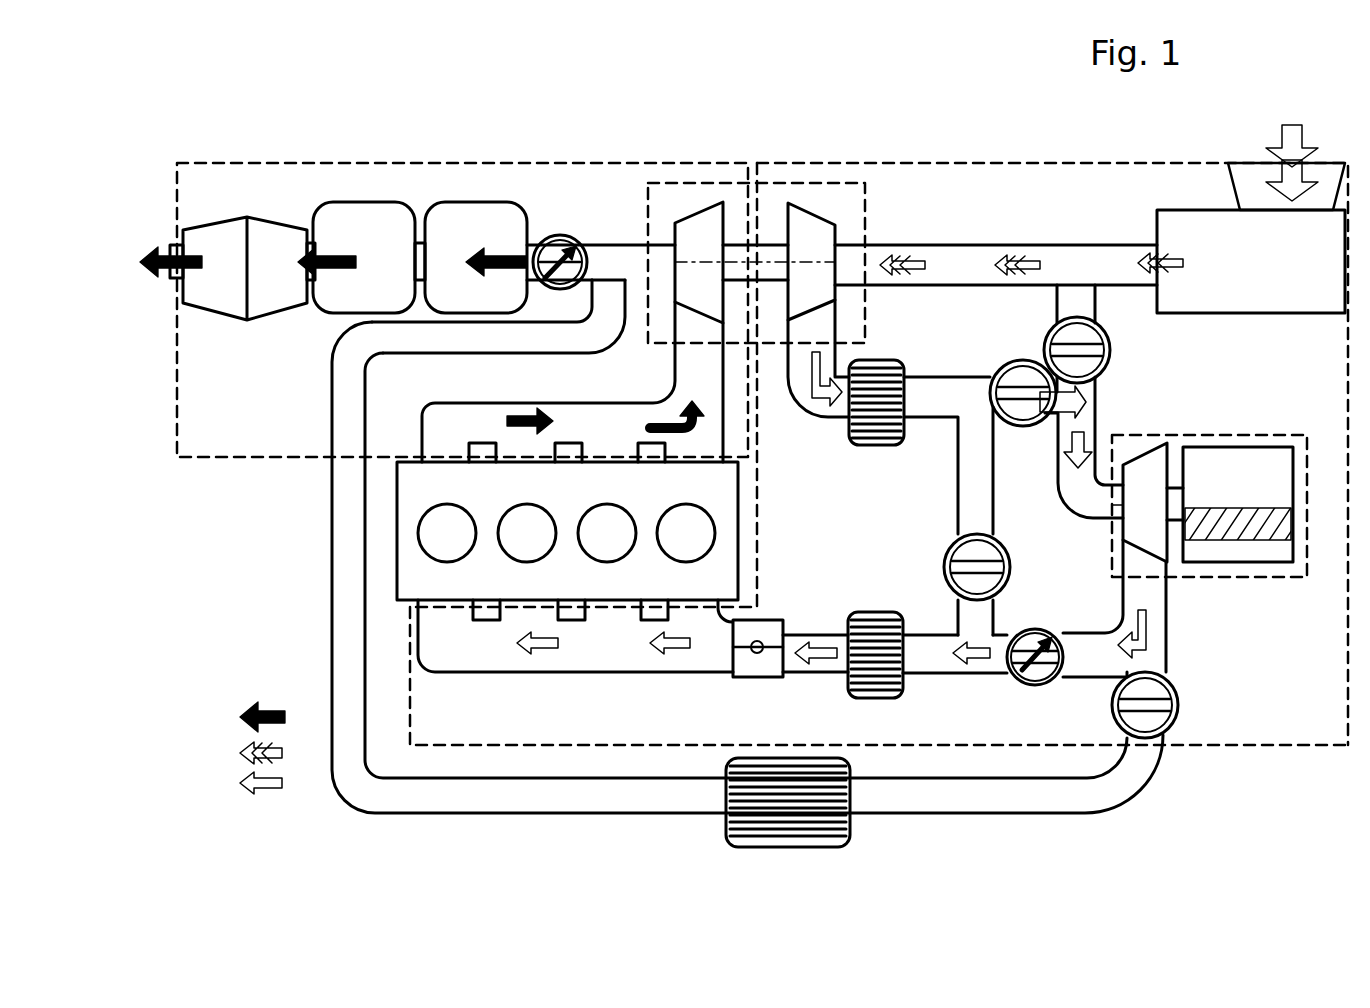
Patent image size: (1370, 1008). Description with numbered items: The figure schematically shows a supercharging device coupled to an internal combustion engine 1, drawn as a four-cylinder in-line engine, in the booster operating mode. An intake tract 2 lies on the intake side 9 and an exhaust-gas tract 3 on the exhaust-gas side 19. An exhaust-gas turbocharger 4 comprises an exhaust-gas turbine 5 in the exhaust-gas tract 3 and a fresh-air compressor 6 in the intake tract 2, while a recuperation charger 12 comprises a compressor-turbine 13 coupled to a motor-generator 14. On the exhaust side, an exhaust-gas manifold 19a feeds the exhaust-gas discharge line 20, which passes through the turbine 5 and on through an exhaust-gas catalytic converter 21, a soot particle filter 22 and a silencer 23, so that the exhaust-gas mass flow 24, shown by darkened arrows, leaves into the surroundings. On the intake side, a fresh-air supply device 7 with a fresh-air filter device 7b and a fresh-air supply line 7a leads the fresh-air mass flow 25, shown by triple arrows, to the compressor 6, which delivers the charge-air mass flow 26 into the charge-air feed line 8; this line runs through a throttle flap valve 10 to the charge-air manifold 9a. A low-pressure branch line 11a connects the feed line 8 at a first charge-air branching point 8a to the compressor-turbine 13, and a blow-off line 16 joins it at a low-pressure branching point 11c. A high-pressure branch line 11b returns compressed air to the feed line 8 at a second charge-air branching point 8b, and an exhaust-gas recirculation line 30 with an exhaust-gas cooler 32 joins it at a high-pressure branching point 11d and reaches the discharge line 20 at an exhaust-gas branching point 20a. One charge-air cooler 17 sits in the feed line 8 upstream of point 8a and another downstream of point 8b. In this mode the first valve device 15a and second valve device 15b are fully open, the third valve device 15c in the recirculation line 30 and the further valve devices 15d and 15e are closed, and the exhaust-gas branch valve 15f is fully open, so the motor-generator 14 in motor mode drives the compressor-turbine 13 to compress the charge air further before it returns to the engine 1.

The internal combustion engine 1 is at (400, 557).
The intake tract 2 is at (410, 687).
The exhaust-gas tract 3 is at (303, 460).
The exhaust-gas turbocharger 4 is at (776, 182).
The exhaust-gas turbine 5 is at (700, 228).
The fresh-air compressor 6 is at (813, 240).
The fresh-air supply device 7 is at (1090, 216).
The fresh-air supply line 7a is at (986, 265).
The fresh-air filter device 7b is at (1236, 270).
The charge-air feed line 8 is at (803, 386).
The first charge-air branching point 8a is at (970, 390).
The second charge-air branching point 8b is at (967, 630).
The intake side 9 is at (575, 667).
The charge-air manifold 9a is at (603, 652).
The throttle flap valve 10 is at (750, 665).
The low-pressure branch line 11a is at (1068, 450).
The high-pressure branch line 11b is at (1142, 600).
The low-pressure branching point 11c is at (1092, 396).
The high-pressure branching point 11d is at (1153, 655).
The recuperation charger 12 is at (1181, 535).
The compressor-turbine 13 is at (1133, 527).
The motor-generator 14 is at (1275, 548).
The first valve device 15a is at (1020, 372).
The second valve device 15b is at (1057, 682).
The third valve device 15c is at (1140, 722).
The further valve device 15d is at (945, 562).
The further valve device 15e is at (1080, 362).
The exhaust-gas branch valve 15f is at (543, 233).
The blow-off line 16 is at (1077, 307).
The charge-air cooler 17 is at (862, 440).
The exhaust-gas side 19 is at (499, 382).
The exhaust-gas manifold 19a is at (487, 418).
The exhaust-gas discharge line 20 is at (673, 355).
The exhaust-gas branching point 20a is at (610, 273).
The exhaust-gas catalytic converter 21 is at (476, 240).
The soot particle filter 22 is at (372, 243).
The silencer 23 is at (279, 243).
The exhaust-gas mass flow 24 is at (333, 489).
The fresh-air mass flow 25 is at (280, 754).
The charge-air mass flow 26 is at (280, 784).
The exhaust-gas recirculation line 30 is at (747, 596).
The exhaust-gas cooler 32 is at (830, 812).